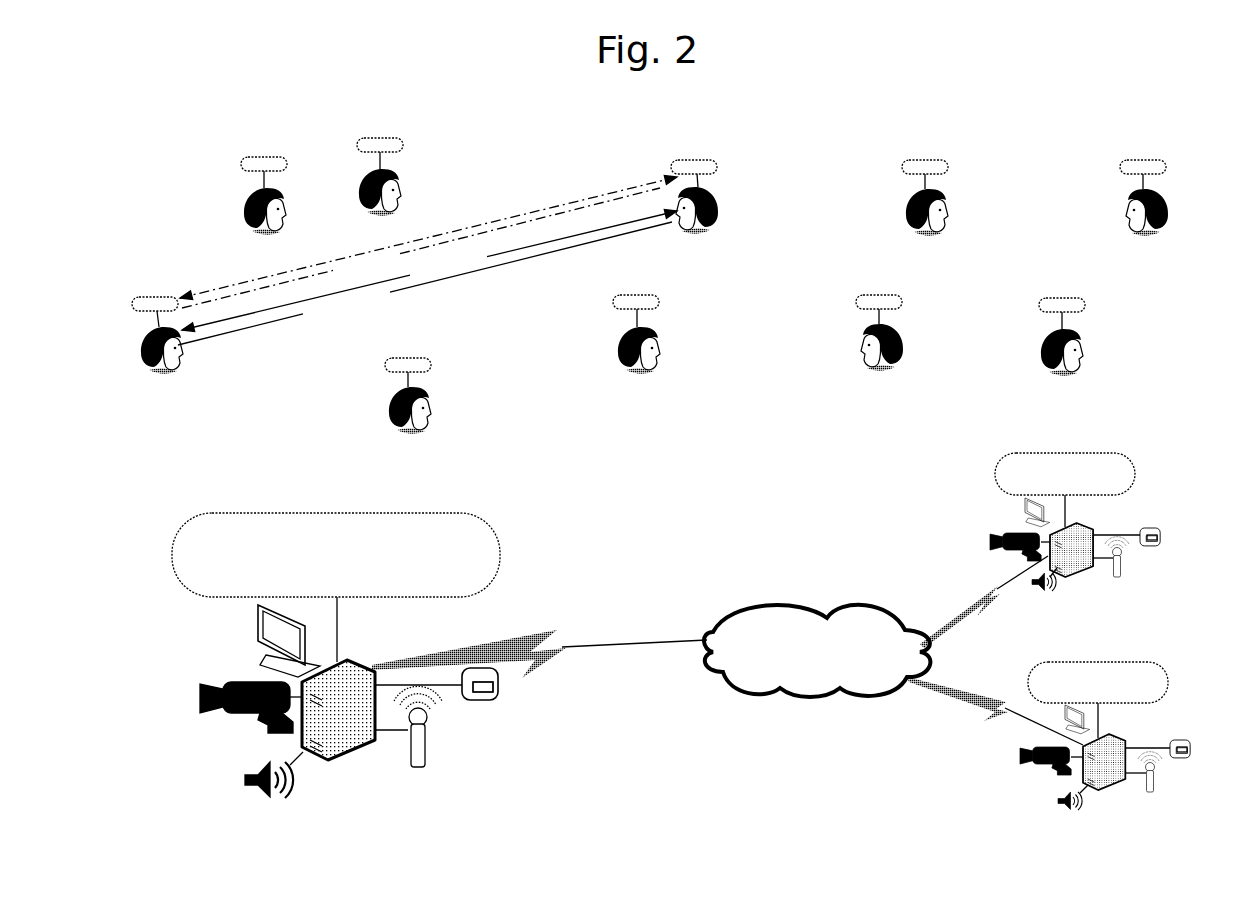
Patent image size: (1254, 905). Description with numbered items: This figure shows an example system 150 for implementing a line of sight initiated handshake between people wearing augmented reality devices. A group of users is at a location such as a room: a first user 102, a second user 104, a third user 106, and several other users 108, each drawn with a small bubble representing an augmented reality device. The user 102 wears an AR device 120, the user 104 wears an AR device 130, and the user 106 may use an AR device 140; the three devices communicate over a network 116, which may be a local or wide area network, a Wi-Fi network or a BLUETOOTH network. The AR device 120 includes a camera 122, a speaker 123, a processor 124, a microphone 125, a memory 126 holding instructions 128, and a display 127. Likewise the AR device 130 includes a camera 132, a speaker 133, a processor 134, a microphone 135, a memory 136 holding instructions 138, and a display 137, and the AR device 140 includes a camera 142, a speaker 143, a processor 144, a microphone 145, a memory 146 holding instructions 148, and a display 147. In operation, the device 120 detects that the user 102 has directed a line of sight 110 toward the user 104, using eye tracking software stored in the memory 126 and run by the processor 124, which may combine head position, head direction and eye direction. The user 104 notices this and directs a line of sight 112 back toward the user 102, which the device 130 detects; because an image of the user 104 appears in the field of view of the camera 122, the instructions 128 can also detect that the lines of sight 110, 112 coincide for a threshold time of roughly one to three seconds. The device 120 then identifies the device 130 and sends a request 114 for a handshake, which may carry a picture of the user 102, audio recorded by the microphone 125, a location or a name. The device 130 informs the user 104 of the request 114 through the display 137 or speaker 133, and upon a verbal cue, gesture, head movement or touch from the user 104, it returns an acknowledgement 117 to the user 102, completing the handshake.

The system 150 is at (167, 87).
The user 102 is at (161, 377).
The user 104 is at (720, 210).
The user 106 is at (618, 329).
The other users 108 is at (243, 203).
The line of sight 110 is at (425, 283).
The line of sight 112 is at (429, 271).
The request 114 is at (333, 277).
The network 116 is at (832, 663).
The acknowledgement 117 is at (420, 225).
The AR device 120 is at (160, 296).
The camera 122 is at (237, 717).
The speaker 123 is at (252, 788).
The processor 124 is at (353, 753).
The microphone 125 is at (427, 750).
The memory 126 is at (477, 707).
The display 127 is at (260, 634).
The instructions 128 is at (493, 688).
The AR device 130 is at (701, 160).
The camera 132 is at (1012, 553).
The speaker 133 is at (1037, 594).
The processor 134 is at (1080, 570).
The microphone 135 is at (1125, 574).
The memory 136 is at (1147, 547).
The display 137 is at (1027, 509).
The instructions 138 is at (1160, 538).
The AR device 140 is at (633, 295).
The camera 142 is at (1040, 767).
The speaker 143 is at (1065, 811).
The processor 144 is at (1110, 783).
The microphone 145 is at (1157, 788).
The memory 146 is at (1177, 758).
The display 147 is at (1066, 717).
The instructions 148 is at (1190, 750).